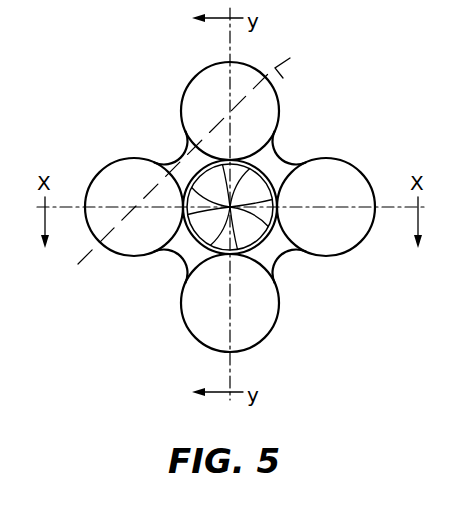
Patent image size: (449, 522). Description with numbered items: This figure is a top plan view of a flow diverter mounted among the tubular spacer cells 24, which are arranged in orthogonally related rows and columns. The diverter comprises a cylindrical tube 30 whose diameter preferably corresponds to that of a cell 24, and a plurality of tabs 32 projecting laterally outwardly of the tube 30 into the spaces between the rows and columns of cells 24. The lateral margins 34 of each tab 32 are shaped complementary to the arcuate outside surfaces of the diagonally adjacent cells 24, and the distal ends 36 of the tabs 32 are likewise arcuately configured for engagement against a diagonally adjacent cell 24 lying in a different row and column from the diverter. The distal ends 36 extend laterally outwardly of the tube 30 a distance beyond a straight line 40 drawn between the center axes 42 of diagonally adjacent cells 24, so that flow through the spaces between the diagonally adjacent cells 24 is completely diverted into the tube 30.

The cell 24 is at (360, 170).
The cylindrical tube 30 is at (277, 238).
The tab 32 is at (176, 136).
The lateral margin 34 is at (292, 238).
The distal end 36 is at (182, 146).
The straight line 40 is at (287, 72).
The center axis 42 is at (228, 116).